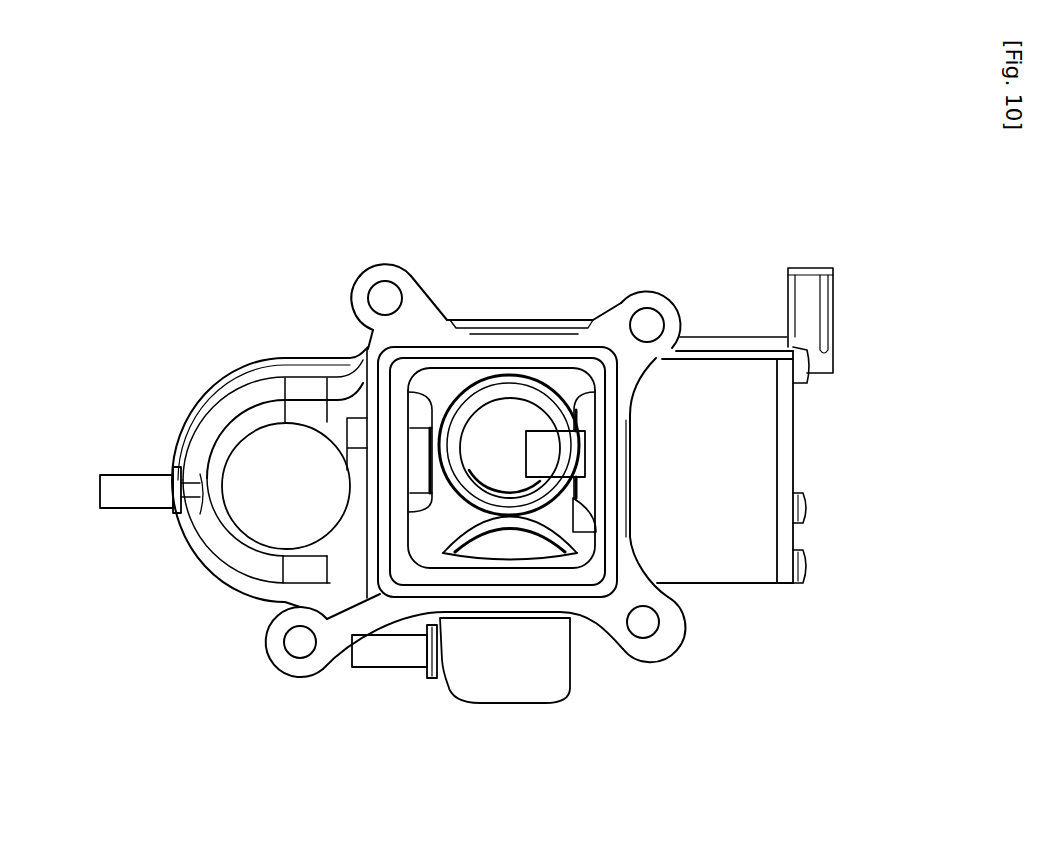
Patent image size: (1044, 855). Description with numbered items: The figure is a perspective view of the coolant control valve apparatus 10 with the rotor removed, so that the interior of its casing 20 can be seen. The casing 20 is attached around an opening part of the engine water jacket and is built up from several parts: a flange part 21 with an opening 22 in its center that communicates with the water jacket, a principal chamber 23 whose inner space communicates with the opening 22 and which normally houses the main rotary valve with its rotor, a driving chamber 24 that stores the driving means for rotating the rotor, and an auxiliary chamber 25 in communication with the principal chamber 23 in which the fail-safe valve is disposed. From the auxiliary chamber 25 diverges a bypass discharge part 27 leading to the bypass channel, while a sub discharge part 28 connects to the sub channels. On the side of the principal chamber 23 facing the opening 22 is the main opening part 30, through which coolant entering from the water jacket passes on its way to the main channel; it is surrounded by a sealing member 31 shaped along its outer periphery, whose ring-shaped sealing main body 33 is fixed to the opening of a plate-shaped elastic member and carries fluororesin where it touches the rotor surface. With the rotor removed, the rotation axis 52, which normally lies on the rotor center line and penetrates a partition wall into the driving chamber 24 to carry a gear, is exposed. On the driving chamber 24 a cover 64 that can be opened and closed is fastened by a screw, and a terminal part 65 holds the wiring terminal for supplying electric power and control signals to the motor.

The coolant control valve apparatus 10 is at (720, 330).
The casing 20 is at (521, 326).
The flange part 21 is at (411, 286).
The opening 22 is at (416, 540).
The principal chamber 23 is at (440, 380).
The driving chamber 24 is at (752, 450).
The auxiliary chamber 25 is at (276, 523).
The bypass discharge part 27 is at (136, 494).
The sub discharge part 28 is at (509, 688).
The main opening part 30 is at (512, 405).
The sealing member 31 is at (543, 403).
The sealing main body 33 is at (543, 548).
The rotation axis 52 is at (566, 455).
The cover 64 is at (790, 542).
The terminal part 65 is at (828, 360).